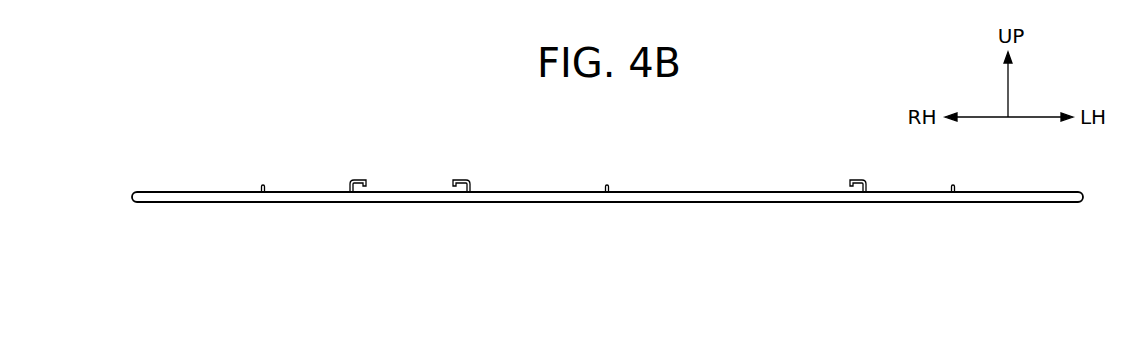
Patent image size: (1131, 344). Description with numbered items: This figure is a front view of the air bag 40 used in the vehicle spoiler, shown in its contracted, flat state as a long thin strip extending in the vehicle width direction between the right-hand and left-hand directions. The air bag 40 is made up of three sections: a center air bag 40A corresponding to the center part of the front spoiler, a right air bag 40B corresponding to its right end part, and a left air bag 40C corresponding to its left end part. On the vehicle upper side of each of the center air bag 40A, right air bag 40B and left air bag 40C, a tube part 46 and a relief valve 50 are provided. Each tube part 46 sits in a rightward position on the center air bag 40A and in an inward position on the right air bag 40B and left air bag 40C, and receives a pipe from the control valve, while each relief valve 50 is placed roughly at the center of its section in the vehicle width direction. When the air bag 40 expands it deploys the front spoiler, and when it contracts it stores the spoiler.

The air bag 40 is at (505, 206).
The center air bag 40A is at (660, 203).
The right air bag 40B is at (293, 203).
The left air bag 40C is at (978, 203).
The tube part 46 is at (362, 178).
The relief valve 50 is at (264, 184).